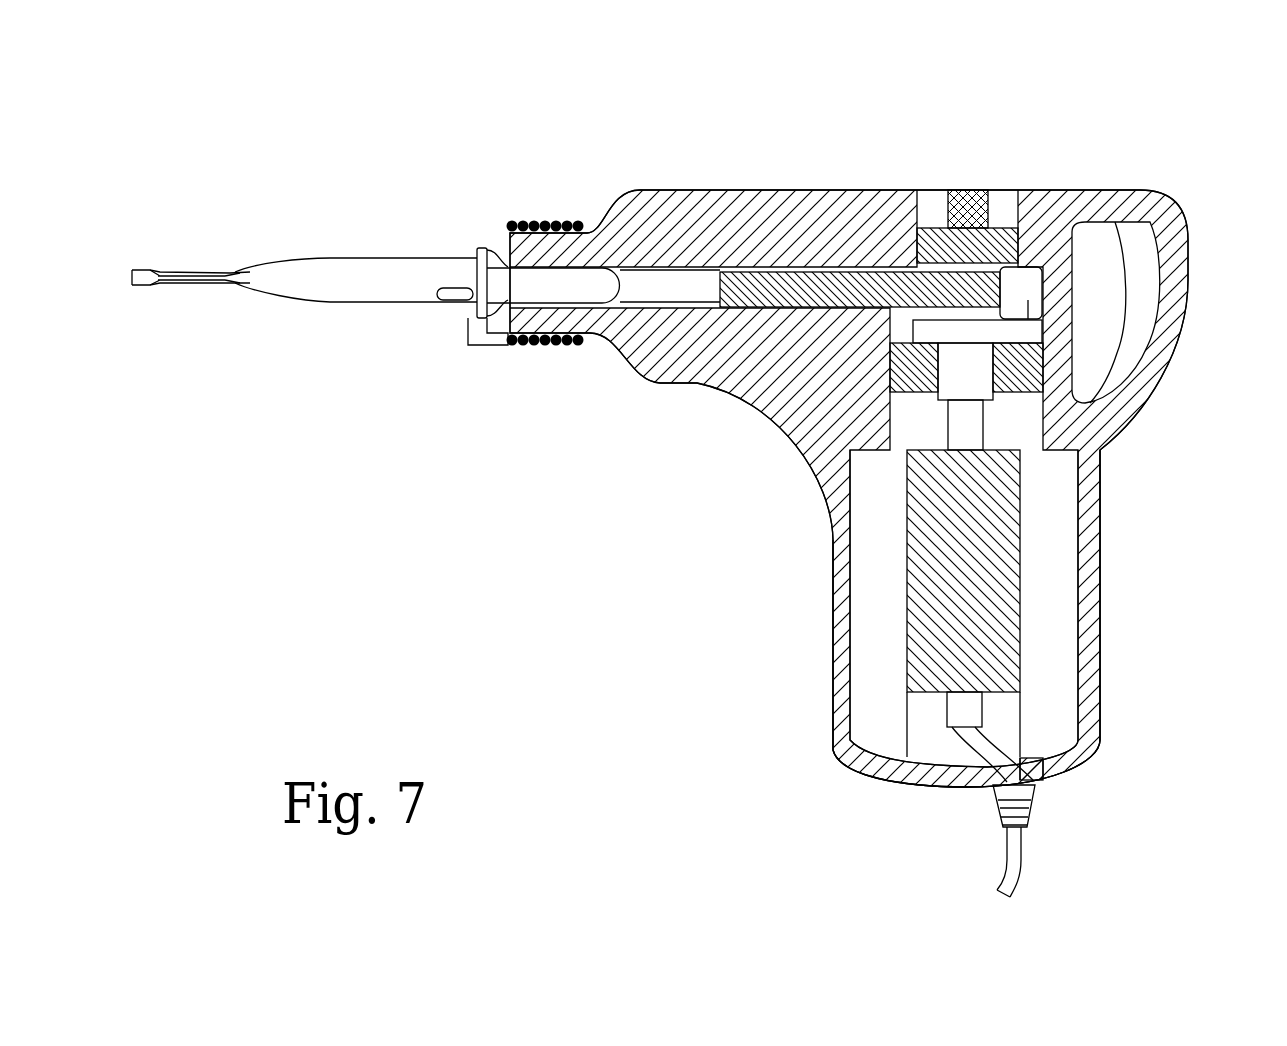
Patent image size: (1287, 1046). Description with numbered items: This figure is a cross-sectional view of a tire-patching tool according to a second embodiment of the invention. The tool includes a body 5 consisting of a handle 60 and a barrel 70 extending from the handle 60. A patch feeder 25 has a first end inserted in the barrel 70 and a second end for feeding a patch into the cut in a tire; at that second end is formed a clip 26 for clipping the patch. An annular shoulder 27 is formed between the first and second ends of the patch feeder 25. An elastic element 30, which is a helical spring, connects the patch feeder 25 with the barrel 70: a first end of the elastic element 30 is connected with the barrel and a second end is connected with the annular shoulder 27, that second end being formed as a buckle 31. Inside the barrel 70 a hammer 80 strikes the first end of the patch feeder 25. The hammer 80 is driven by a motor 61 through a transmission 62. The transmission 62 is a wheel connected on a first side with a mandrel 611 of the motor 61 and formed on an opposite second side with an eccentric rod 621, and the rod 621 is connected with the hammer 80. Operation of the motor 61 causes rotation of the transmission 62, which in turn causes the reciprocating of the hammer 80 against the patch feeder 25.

The body 5 is at (760, 468).
The patch feeder 25 is at (334, 246).
The clip 26 is at (188, 287).
The annular shoulder 27 is at (480, 246).
The elastic element 30 is at (548, 352).
The buckle 31 is at (468, 327).
The handle 60 is at (826, 601).
The motor 61 is at (988, 512).
The mandrel 611 is at (967, 432).
The transmission 62 is at (1025, 370).
The eccentric rod 621 is at (1015, 300).
The barrel 70 is at (785, 182).
The hammer 80 is at (857, 285).